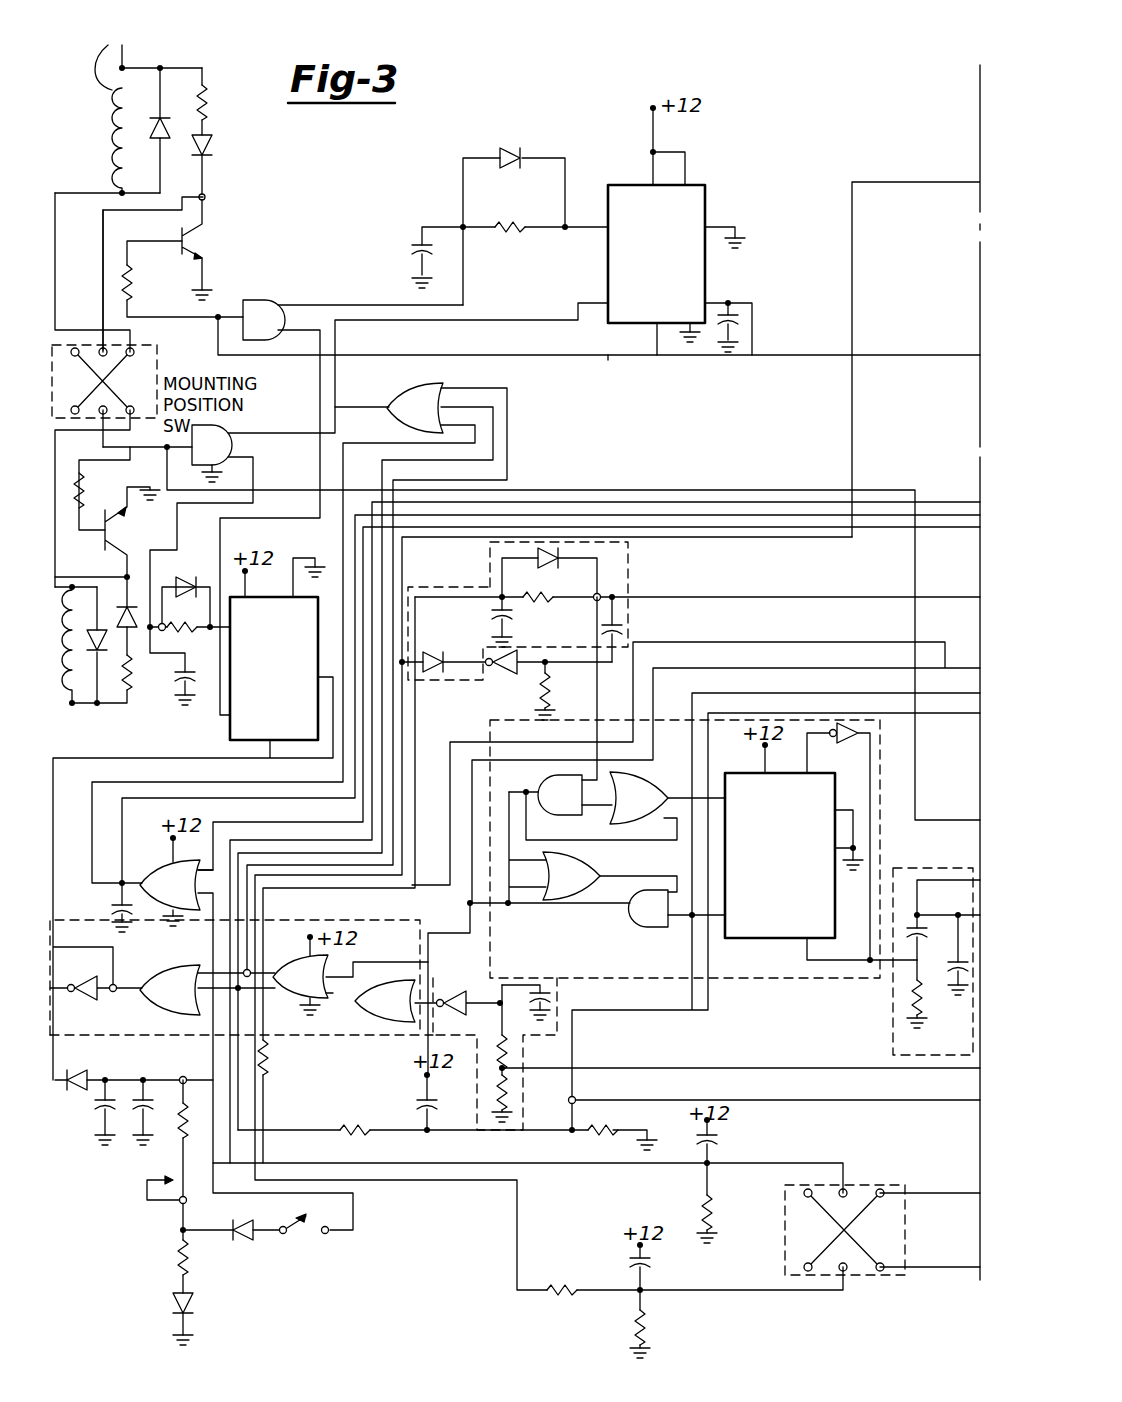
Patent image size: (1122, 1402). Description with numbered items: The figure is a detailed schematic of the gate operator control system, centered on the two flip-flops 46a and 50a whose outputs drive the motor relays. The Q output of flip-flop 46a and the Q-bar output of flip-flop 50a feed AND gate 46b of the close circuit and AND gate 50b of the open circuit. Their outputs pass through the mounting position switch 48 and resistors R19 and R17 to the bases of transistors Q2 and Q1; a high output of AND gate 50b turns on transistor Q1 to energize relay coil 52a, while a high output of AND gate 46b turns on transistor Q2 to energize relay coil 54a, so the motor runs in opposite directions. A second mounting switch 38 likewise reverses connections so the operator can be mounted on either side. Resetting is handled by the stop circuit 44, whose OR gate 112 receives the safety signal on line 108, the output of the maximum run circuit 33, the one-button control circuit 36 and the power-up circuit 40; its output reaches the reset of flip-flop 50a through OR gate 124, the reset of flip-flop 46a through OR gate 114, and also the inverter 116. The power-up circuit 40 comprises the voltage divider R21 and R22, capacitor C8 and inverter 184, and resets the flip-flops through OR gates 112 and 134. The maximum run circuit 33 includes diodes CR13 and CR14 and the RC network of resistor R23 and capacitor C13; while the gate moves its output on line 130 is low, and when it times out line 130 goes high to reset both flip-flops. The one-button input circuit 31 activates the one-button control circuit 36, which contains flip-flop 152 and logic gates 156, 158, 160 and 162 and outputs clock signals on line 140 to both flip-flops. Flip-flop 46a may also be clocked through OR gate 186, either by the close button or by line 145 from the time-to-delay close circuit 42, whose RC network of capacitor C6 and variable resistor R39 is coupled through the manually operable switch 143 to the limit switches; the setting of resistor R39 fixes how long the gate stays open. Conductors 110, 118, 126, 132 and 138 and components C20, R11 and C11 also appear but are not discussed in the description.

The relay coil 52a is at (128, 103).
The transistor Q1 is at (205, 233).
The resistor R17 is at (133, 290).
The mounting position switch 48 is at (84, 346).
The AND gate 50b is at (262, 306).
The flip-flop 50a is at (710, 188).
The line 108 is at (922, 142).
The conductor 126 is at (628, 372).
The OR gate 124 is at (299, 756).
The diode CR14 is at (545, 548).
The resistor R23 is at (697, 586).
The capacitor C13 is at (520, 622).
The diode CR13 is at (440, 638).
The maximum run circuit 33 is at (630, 582).
The line 130 is at (417, 707).
The AND gate 46b is at (230, 448).
The resistor R19 is at (82, 492).
The transistor Q2 is at (112, 542).
The flip-flop 46a is at (270, 597).
The relay coil 54a is at (60, 700).
The conductor 118 is at (188, 752).
The OR gate 186 is at (491, 1014).
The line 145 is at (210, 935).
The input circuit 110 is at (104, 976).
The inverter 116 is at (78, 1000).
The OR gate 114 is at (207, 990).
The OR gate 112 is at (350, 974).
The conductor 132 is at (326, 998).
The OR gate 134 is at (385, 1001).
The conductor 138 is at (466, 908).
The inverter 184 is at (452, 998).
The capacitor C8 is at (548, 990).
The power-up circuit 40 is at (560, 1003).
The resistor R21 is at (508, 1055).
The resistor R22 is at (508, 1090).
The logic gate 156 is at (593, 718).
The logic gate 158 is at (667, 798).
The logic gate 160 is at (593, 847).
The logic gate 162 is at (597, 908).
The flip-flop 152 is at (821, 843).
The capacitor C20 is at (893, 920).
The resistor R11 is at (903, 994).
The capacitor C11 is at (950, 970).
The one-button control circuit 36 is at (762, 990).
The one-button input circuit 31 is at (926, 1056).
The capacitor C6 is at (100, 1110).
The time-to-delay close circuit 42 is at (135, 1168).
The variable resistor R39 is at (185, 1185).
The manually operable switch 143 is at (330, 1227).
The line 140 is at (312, 1130).
The stop circuit 44 is at (274, 1036).
The mounting switch 38 is at (858, 1278).